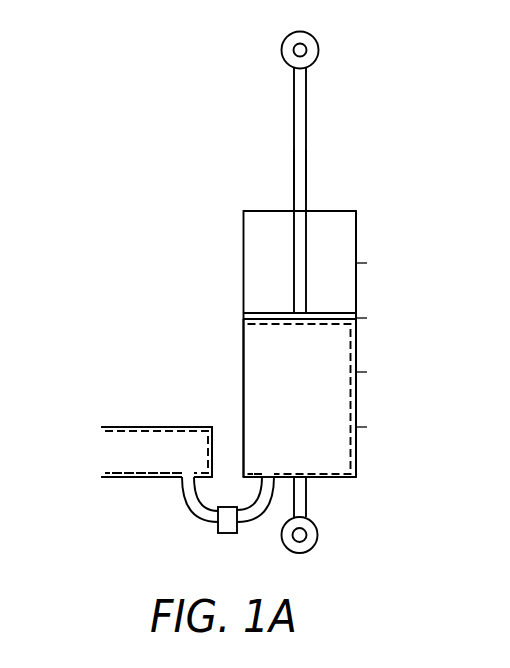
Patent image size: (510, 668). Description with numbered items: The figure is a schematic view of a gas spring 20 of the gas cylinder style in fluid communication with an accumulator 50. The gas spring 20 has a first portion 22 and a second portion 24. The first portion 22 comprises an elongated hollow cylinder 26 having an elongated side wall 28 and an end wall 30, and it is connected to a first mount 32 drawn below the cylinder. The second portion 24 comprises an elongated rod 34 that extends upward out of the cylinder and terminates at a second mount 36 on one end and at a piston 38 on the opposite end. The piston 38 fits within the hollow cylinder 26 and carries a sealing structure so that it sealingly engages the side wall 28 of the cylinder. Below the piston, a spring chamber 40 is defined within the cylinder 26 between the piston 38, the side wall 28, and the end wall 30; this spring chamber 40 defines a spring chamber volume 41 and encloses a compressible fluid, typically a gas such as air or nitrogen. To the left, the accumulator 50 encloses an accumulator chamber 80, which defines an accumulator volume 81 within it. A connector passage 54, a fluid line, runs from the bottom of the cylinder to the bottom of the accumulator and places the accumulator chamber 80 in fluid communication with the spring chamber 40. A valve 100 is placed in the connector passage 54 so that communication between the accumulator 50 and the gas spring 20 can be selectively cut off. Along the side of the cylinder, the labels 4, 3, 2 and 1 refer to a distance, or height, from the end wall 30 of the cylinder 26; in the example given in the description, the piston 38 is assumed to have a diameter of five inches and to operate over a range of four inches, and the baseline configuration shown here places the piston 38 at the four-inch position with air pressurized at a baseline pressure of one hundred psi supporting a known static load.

The distance label 1 is at (373, 429).
The distance label 2 is at (373, 374).
The distance label 3 is at (373, 319).
The distance label 4 is at (373, 266).
The gas spring 20 is at (375, 193).
The first portion 22 is at (361, 457).
The second portion 24 is at (326, 156).
The hollow cylinder 26 is at (360, 400).
The side wall 28 is at (357, 292).
The end wall 30 is at (344, 478).
The first mount 32 is at (318, 538).
The elongated rod 34 is at (295, 153).
The second mount 36 is at (285, 40).
The piston 38 is at (323, 313).
The spring chamber 40 is at (326, 361).
The spring chamber volume 41 is at (318, 327).
The accumulator 50 is at (98, 467).
The connector passage 54 is at (205, 519).
The accumulator chamber 80 is at (143, 440).
The accumulator volume 81 is at (186, 428).
The valve 100 is at (228, 534).